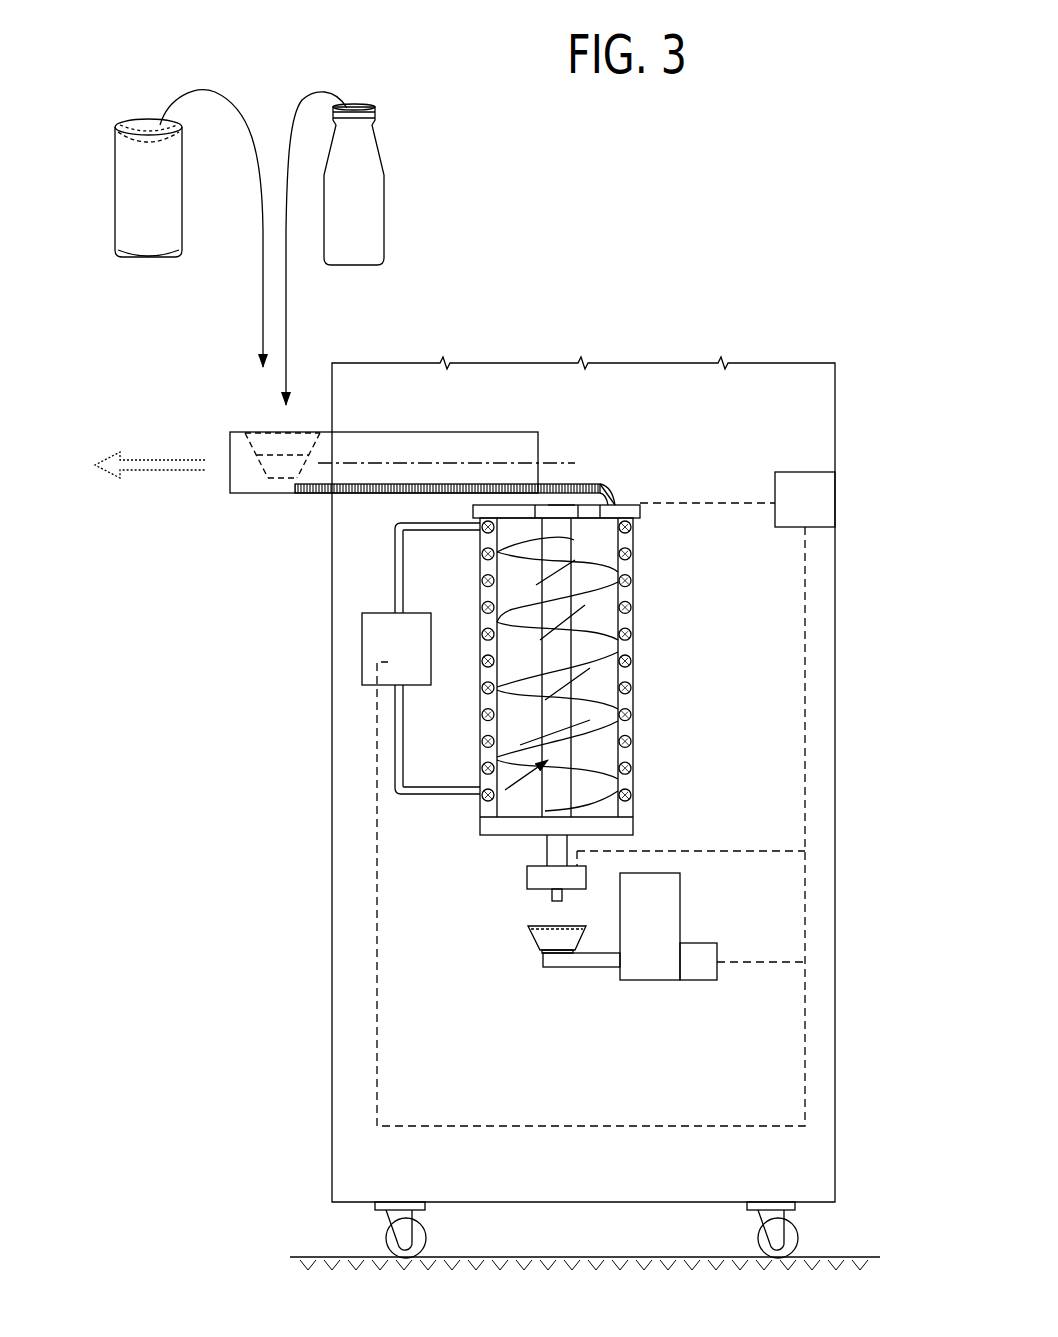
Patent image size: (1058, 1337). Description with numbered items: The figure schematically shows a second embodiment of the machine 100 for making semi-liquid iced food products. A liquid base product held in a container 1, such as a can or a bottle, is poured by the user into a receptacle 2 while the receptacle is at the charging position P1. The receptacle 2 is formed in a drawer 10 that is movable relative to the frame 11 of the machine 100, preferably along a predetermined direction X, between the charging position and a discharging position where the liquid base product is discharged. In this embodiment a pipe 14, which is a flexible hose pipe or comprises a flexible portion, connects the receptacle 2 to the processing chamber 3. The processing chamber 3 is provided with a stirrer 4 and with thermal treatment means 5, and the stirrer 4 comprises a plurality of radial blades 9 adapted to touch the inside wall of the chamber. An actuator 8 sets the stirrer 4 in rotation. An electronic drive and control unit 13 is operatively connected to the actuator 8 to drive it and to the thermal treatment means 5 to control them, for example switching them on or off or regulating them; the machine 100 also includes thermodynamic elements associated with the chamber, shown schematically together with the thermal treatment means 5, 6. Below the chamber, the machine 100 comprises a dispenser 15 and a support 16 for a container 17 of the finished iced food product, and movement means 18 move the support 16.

The machine 100 is at (800, 272).
The container 1 is at (108, 178).
The charging position P1 is at (303, 415).
The receptacle 2 is at (262, 430).
The drawer 10 is at (490, 432).
The predetermined direction X is at (556, 463).
The frame 11 is at (330, 675).
The processing chamber 3 is at (554, 687).
The stirrer 4 is at (480, 829).
The thermal treatment means 5 is at (635, 661).
The pump / fluid supply 6 is at (421, 658).
The actuator 8 is at (562, 512).
The radial blades 9 is at (497, 640).
The drive and control unit 13 is at (606, 799).
The pipe 14 is at (620, 490).
The dispenser 15 is at (522, 880).
The support 16 is at (560, 970).
The container of the finished iced food product 17 is at (526, 945).
The movement means 18 is at (668, 926).